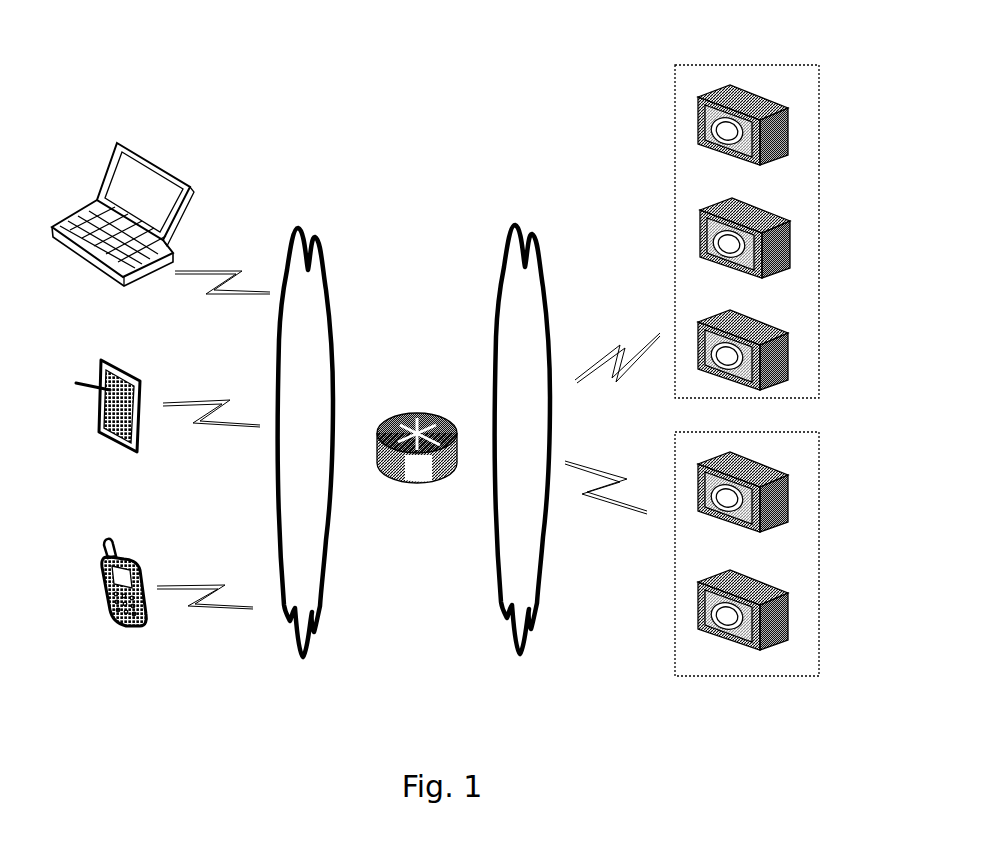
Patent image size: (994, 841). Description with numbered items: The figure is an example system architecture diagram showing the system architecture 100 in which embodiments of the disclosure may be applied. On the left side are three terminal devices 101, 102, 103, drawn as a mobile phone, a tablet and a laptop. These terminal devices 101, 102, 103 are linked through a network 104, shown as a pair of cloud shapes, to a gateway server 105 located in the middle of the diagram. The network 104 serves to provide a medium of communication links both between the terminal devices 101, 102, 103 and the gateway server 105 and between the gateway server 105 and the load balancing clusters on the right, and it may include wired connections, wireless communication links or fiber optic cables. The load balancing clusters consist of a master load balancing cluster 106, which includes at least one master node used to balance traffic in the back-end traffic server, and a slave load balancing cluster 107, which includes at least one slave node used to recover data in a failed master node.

The system architecture 100 is at (722, 20).
The terminal device 101 is at (124, 599).
The terminal device 102 is at (108, 421).
The terminal device 103 is at (123, 228).
The network 104 is at (414, 441).
The gateway server 105 is at (417, 473).
The master load balancing cluster 106 is at (747, 245).
The slave load balancing cluster 107 is at (747, 575).